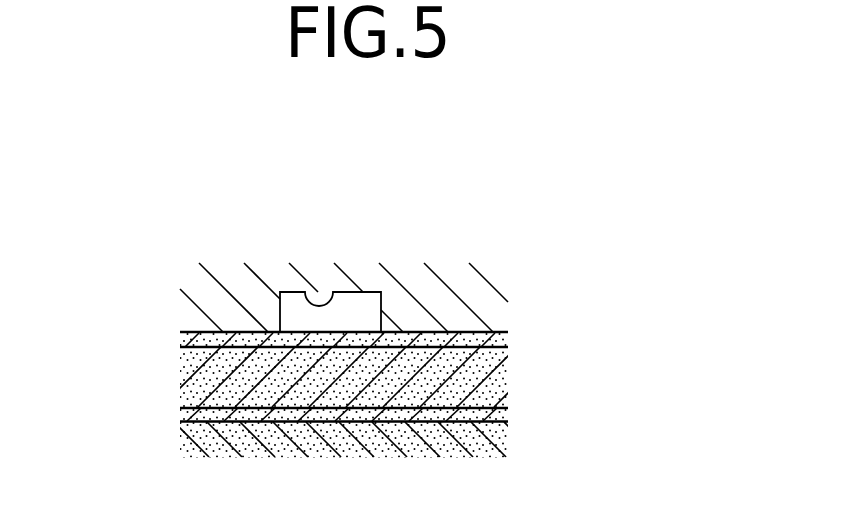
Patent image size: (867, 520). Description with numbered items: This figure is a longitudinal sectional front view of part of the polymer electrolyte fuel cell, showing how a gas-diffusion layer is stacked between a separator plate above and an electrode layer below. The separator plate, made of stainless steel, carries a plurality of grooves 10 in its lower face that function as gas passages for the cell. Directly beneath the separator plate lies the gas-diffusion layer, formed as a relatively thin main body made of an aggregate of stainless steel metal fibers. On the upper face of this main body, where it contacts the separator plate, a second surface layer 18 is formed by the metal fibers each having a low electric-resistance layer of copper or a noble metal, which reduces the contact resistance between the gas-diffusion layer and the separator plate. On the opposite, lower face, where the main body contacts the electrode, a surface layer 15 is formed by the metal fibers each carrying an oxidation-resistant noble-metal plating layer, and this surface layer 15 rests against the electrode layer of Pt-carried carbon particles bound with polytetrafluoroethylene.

The grooves 10 is at (333, 292).
The second surface layer 18 is at (180, 334).
The surface layer 15 is at (180, 413).